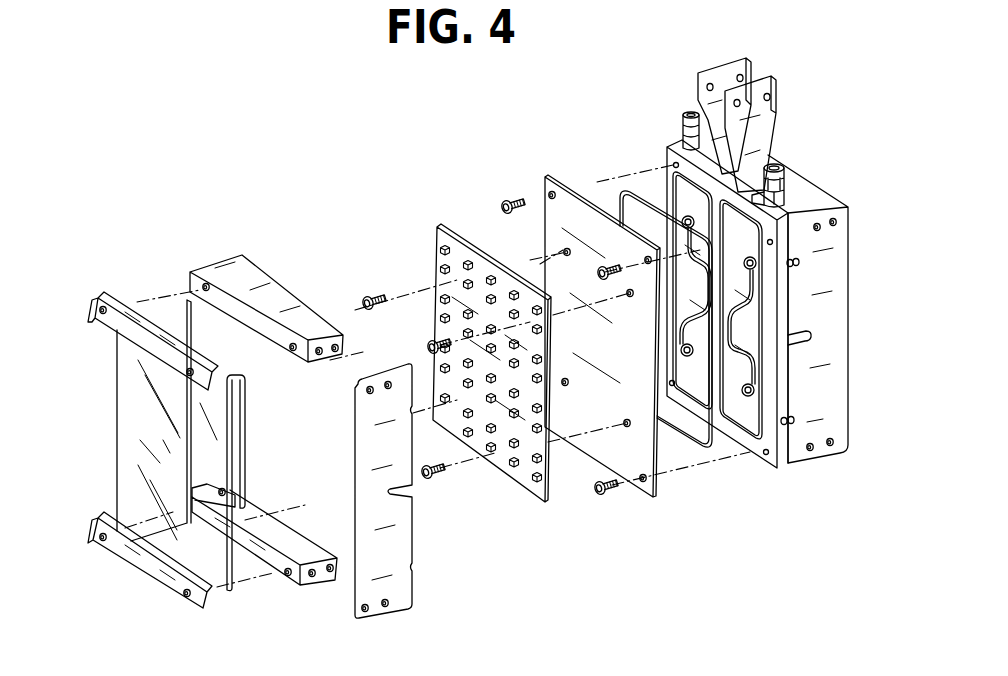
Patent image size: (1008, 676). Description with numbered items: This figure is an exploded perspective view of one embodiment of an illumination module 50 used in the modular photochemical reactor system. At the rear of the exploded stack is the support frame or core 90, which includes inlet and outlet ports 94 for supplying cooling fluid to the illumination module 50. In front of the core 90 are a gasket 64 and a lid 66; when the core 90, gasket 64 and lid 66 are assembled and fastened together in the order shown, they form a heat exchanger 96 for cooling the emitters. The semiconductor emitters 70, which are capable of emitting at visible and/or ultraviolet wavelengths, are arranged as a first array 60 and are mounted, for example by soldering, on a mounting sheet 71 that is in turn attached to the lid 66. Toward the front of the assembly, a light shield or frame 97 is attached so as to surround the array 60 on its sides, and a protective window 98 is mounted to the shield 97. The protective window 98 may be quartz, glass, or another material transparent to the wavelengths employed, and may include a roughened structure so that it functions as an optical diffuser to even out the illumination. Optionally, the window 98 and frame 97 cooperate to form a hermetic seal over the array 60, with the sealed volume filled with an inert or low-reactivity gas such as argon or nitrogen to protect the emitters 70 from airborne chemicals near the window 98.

The illumination module 50 is at (73, 262).
The first array of semiconductor emitters 60 is at (535, 507).
The gasket 64 is at (640, 193).
The lid 66 is at (553, 215).
The semiconductor emitters 70 is at (467, 260).
The mounting sheet 71 is at (487, 462).
The support frame or core 90 is at (782, 308).
The inlet and outlet ports 94 is at (695, 118).
The heat exchanger 96 is at (852, 480).
The light shield or frame 97 is at (350, 606).
The protective window 98 is at (128, 448).